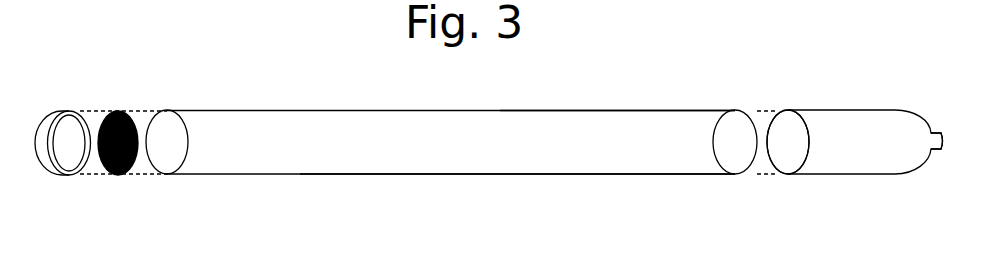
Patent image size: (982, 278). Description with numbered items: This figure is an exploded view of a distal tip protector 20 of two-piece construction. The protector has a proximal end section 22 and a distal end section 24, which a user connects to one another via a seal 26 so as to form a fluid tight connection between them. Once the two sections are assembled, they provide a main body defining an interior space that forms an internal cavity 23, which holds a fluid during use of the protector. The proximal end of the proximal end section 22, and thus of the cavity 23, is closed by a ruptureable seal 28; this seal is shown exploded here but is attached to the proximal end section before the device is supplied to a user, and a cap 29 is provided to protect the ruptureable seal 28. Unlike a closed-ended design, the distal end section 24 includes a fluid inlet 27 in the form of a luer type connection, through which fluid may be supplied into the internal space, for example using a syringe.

The distal tip protector 20 is at (357, 100).
The proximal end section 22 is at (524, 173).
The internal cavity 23 is at (650, 130).
The distal end section 24 is at (859, 174).
The seal 26 is at (798, 111).
The fluid inlet 27 is at (942, 120).
The ruptureable seal 28 is at (113, 110).
The cap 29 is at (53, 175).